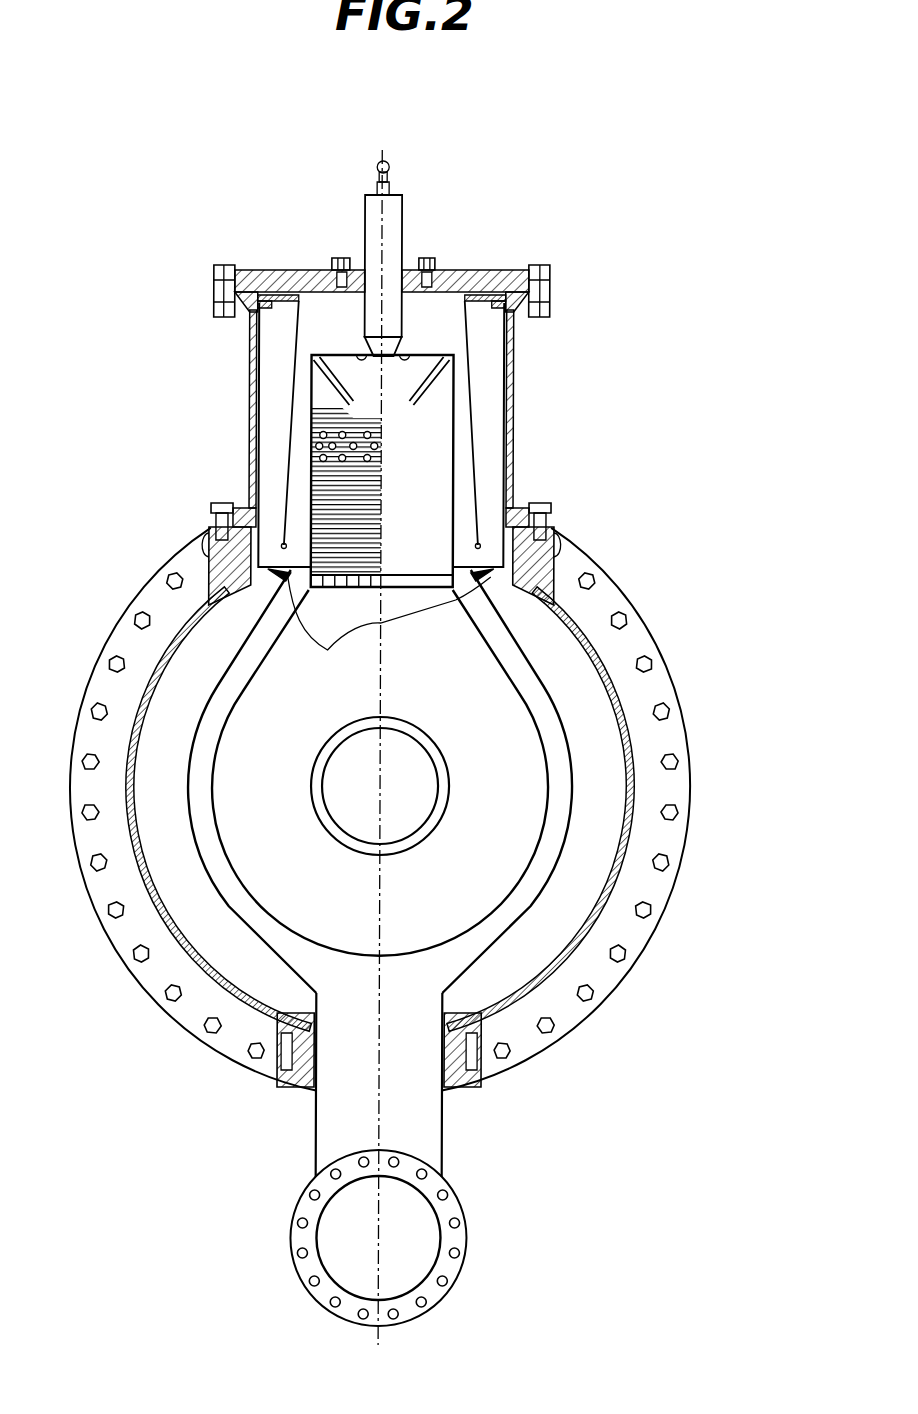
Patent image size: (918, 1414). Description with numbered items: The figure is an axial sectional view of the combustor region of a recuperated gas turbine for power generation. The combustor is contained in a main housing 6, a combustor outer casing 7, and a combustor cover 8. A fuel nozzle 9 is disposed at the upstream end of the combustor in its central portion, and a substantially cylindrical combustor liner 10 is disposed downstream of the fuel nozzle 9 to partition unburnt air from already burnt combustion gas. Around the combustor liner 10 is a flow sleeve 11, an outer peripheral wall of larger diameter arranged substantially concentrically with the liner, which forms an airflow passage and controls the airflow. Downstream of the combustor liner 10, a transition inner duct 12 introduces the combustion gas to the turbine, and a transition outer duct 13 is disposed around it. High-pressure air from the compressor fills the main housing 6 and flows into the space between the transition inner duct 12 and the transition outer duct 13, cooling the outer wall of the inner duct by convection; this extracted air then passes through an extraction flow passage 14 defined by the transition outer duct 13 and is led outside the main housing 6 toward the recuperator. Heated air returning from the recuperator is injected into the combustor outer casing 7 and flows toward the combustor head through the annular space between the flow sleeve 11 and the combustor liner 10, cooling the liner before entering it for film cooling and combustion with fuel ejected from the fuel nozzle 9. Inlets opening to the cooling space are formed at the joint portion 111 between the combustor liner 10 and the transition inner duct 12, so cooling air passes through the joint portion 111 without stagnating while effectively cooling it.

The main housing 6 is at (630, 745).
The combustor outer casing 7 is at (514, 398).
The combustor cover 8 is at (478, 270).
The fuel nozzle 9 is at (373, 322).
The combustor liner 10 is at (448, 520).
The flow sleeve 11 is at (474, 449).
The transition inner duct 12 is at (547, 770).
The transition outer duct 13 is at (543, 683).
The extraction flow passage 14 is at (470, 980).
The joint portion 111 is at (380, 629).